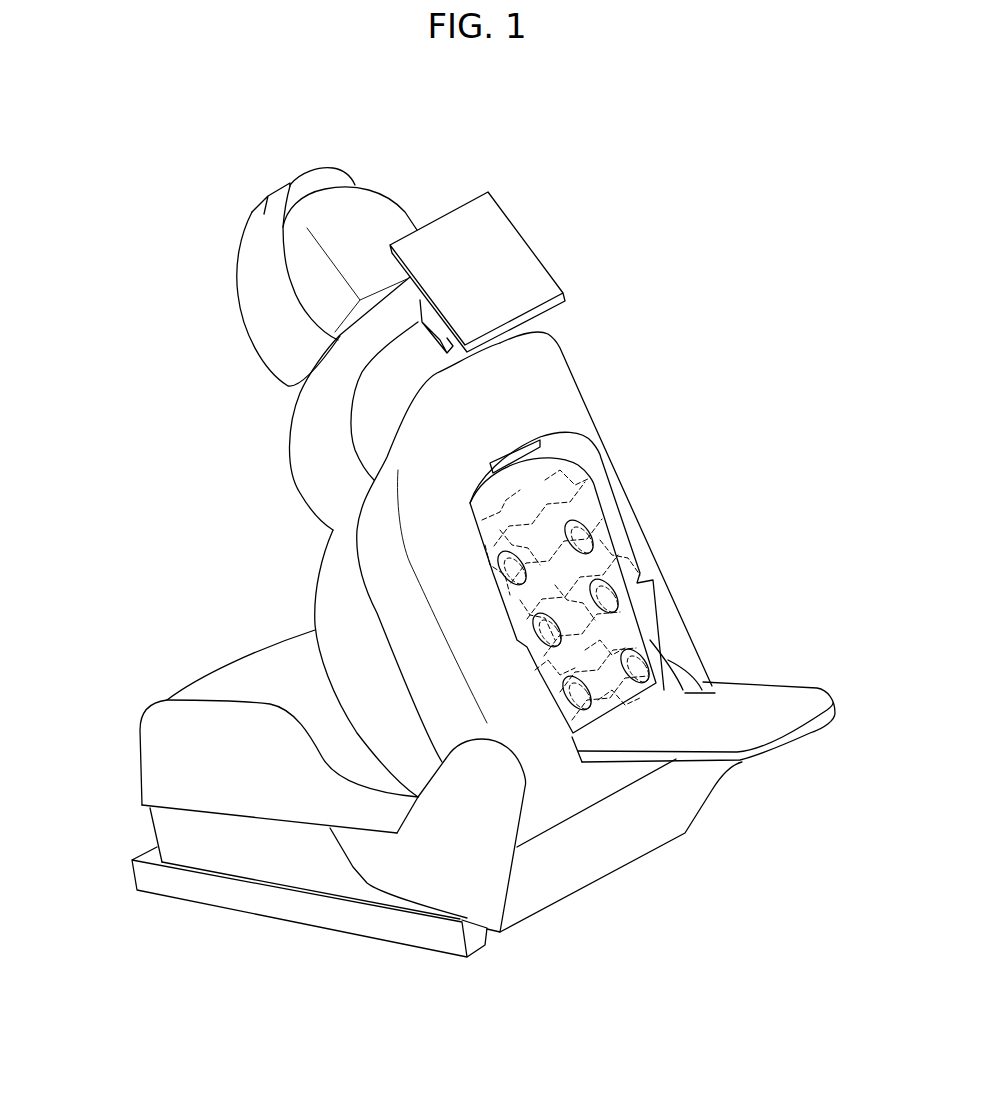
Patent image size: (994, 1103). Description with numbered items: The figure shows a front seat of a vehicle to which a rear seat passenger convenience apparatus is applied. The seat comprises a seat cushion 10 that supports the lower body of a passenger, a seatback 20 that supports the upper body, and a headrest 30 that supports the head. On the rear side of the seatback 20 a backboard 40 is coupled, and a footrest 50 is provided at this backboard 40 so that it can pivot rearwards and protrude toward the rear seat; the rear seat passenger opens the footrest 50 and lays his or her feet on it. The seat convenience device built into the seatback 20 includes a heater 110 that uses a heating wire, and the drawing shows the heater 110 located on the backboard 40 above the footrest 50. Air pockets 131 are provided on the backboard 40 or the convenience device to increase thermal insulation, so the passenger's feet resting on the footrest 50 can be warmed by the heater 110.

The seat cushion 10 is at (170, 760).
The seatback 20 is at (337, 585).
The headrest 30 is at (366, 210).
The backboard 40 is at (555, 387).
The footrest 50 is at (805, 700).
The heater 110 is at (618, 623).
The air pockets 131 is at (588, 528).